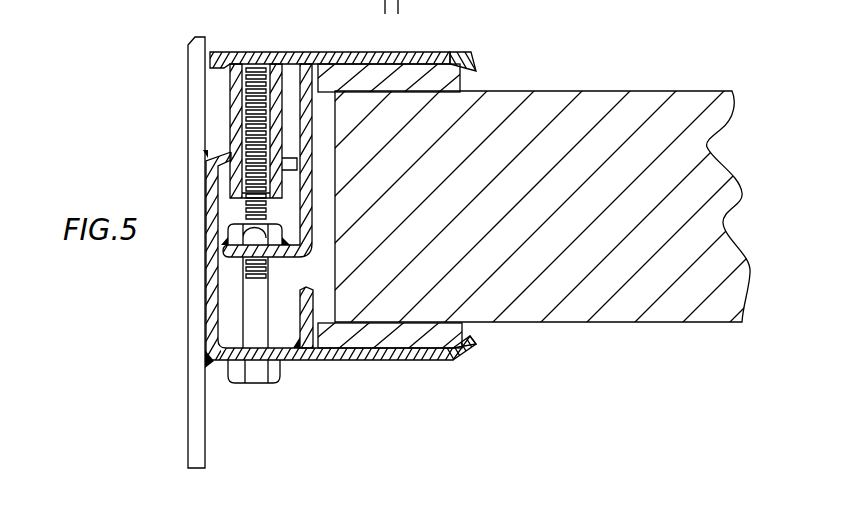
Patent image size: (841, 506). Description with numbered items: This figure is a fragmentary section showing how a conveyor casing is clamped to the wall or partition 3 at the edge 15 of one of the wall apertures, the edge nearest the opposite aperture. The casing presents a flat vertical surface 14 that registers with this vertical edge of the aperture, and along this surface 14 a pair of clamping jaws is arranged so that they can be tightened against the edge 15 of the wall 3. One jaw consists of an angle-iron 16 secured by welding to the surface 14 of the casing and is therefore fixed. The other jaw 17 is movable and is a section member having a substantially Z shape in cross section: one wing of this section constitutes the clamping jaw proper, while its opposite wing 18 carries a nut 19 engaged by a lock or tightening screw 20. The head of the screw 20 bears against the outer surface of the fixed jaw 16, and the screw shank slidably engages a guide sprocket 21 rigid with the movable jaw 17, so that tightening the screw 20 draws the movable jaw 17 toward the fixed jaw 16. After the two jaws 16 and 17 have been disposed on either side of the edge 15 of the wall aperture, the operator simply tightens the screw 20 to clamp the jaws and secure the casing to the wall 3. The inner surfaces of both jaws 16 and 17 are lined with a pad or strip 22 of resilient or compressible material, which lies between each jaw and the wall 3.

The wall or partition 3 is at (598, 117).
The flat vertical surface 14 is at (198, 84).
The edge 15 is at (335, 125).
The angle-iron 16 is at (348, 362).
The movable jaw 17 is at (405, 58).
The wing 18 is at (222, 282).
The nut 19 is at (228, 224).
The tightening screw 20 is at (248, 316).
The guide sprocket 21 is at (232, 130).
The pad or strip 22 is at (437, 72).